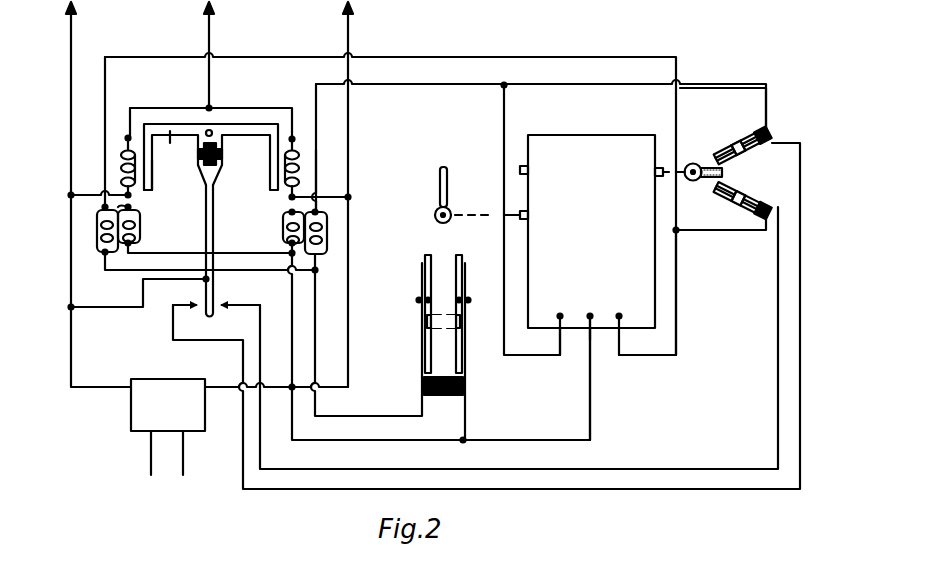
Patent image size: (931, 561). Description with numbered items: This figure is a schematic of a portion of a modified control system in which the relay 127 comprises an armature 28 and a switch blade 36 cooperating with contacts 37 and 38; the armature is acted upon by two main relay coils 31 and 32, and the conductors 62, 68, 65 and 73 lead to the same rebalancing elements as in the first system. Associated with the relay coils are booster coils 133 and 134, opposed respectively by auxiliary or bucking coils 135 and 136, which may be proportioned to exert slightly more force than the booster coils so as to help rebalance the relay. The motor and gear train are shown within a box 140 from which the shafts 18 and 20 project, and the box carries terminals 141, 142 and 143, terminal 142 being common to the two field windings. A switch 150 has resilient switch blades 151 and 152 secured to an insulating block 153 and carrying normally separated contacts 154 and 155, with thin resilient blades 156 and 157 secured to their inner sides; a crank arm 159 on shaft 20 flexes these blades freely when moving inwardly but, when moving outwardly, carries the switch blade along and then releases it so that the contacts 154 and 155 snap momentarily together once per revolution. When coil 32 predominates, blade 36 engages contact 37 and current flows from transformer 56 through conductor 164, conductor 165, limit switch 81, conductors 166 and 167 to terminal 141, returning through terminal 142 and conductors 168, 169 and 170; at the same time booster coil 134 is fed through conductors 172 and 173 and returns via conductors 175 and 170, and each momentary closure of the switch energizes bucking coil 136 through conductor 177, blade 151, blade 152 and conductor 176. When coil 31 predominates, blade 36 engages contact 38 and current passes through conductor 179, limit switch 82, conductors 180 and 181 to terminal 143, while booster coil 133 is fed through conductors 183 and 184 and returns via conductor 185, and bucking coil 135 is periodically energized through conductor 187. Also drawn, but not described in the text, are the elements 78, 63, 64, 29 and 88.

The conductor 68 is at (73, 30).
The power lead 78 is at (211, 33).
The conductor 73 is at (350, 33).
The conductor 183 is at (551, 58).
The conductor 172 is at (433, 84).
The conductor 166 is at (719, 86).
The conductor 167 is at (503, 140).
The conductor 181 is at (677, 345).
The conductor 63 is at (130, 108).
The conductor 64 is at (281, 108).
The relay 127 is at (172, 99).
The armature 28 is at (192, 150).
The pivot 29 is at (212, 131).
The conductor 184 is at (172, 183).
The switch blade 36 is at (213, 222).
The main relay coil 31 is at (122, 150).
The main relay coil 32 is at (300, 155).
The conductor 62 is at (88, 194).
The conductor 65 is at (335, 197).
The conductor 173 is at (317, 187).
The booster coil 133 is at (136, 226).
The auxiliary coil 135 is at (97, 241).
The booster coil 134 is at (283, 233).
The auxiliary coil 136 is at (327, 246).
The conductor 185 is at (183, 250).
The conductor 187 is at (118, 271).
The conductor 164 is at (133, 309).
The contact 37 is at (197, 303).
The contact 38 is at (221, 303).
The conductor 165 is at (208, 341).
The conductor 175 is at (290, 318).
The conductor 177 is at (316, 332).
The conductor 179 is at (283, 469).
The conductor 169 is at (378, 441).
The conductor 170 is at (222, 389).
The conductor 176 is at (466, 418).
The conductor 168 is at (592, 418).
The transformer 56 is at (116, 414).
The crank arm 159 is at (440, 174).
The shaft 20 is at (483, 201).
The box 140 is at (605, 229).
The shaft 18 is at (657, 166).
The motor terminal 141 is at (562, 318).
The motor terminal 142 is at (598, 313).
The motor terminal 143 is at (647, 321).
The switch armature 88 is at (700, 165).
The limit switch 81 is at (729, 132).
The limit switch 82 is at (724, 204).
The conductor 180 is at (723, 233).
The switch 150 is at (405, 318).
The resilient switch blade 151 is at (420, 357).
The resilient switch blade 152 is at (466, 357).
The resilient blade 156 is at (425, 256).
The resilient blade 157 is at (463, 256).
The contact 155 is at (447, 312).
The contact 154 is at (434, 329).
The insulating block 153 is at (441, 396).